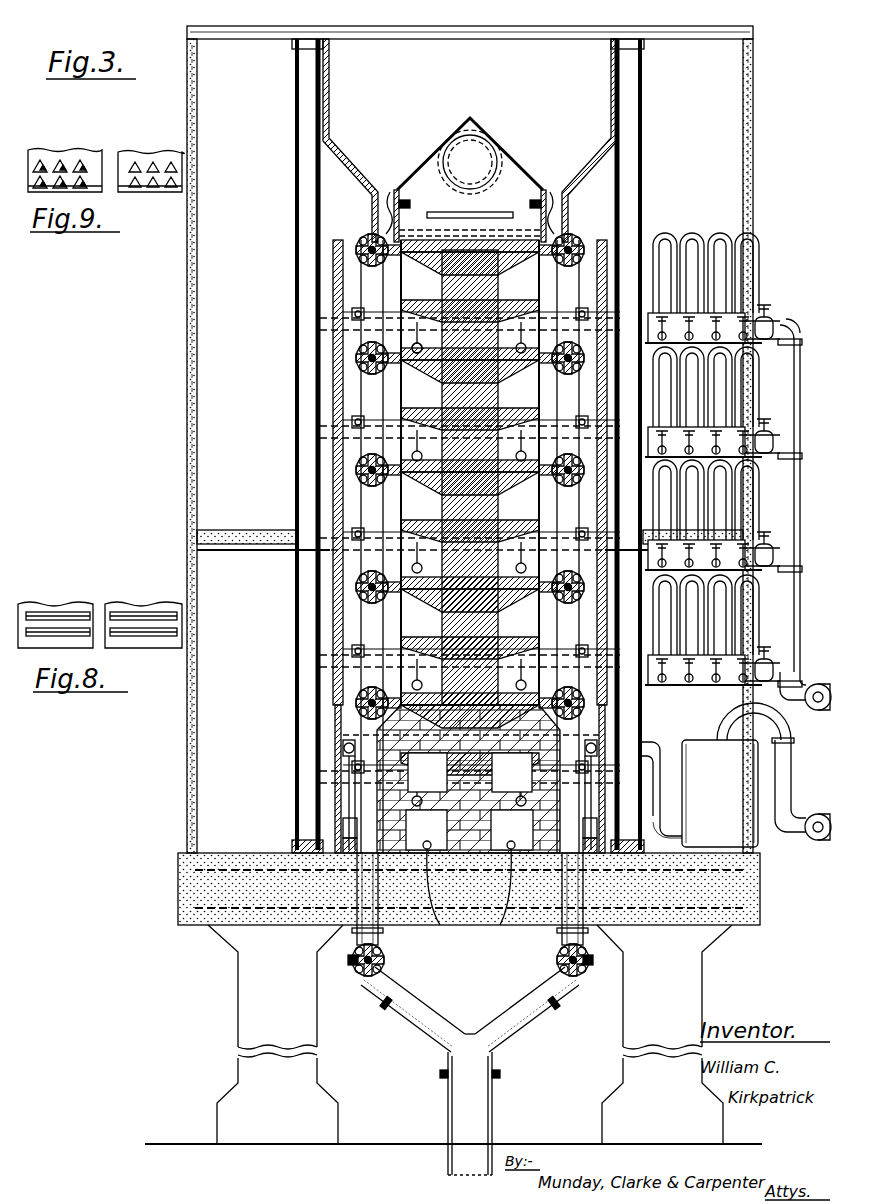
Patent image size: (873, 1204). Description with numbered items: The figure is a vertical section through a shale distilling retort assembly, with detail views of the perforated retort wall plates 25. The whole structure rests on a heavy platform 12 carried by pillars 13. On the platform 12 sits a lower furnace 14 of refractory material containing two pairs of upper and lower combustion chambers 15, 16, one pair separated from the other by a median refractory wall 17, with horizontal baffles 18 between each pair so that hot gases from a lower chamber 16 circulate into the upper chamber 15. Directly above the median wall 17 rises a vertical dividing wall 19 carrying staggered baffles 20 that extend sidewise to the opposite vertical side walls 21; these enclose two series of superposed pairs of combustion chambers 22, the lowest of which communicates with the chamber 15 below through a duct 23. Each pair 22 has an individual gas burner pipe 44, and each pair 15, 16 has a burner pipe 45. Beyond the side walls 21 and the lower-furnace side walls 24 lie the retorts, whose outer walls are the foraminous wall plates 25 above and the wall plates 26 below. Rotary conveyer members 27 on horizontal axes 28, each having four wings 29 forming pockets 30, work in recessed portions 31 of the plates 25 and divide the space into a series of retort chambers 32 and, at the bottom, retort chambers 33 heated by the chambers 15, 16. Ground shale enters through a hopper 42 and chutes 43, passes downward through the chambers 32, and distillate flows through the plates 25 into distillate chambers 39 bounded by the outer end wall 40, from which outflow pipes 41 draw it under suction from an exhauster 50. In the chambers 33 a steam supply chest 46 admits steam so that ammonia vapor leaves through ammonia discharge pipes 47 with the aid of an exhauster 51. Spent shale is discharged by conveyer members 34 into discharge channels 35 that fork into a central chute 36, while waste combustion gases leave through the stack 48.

In FIG. 3, the platform 12 is at (200, 895).
In FIG. 3, the pillars 13 is at (255, 963).
In FIG. 3, the lower furnace 14 is at (605, 722).
In FIG. 3, the upper combustion chamber 15 is at (470, 772).
In FIG. 3, the lower combustion chamber 16 is at (469, 830).
In FIG. 3, the median refractory wall 17 is at (472, 800).
In FIG. 3, the horizontal baffles 18 is at (491, 779).
In FIG. 3, the vertical dividing wall 19 is at (560, 285).
In FIG. 3, the baffles 20 is at (590, 318).
In FIG. 3, the vertical side walls 21 is at (395, 386).
In FIG. 3, the pairs of combustion chambers 22 is at (418, 320).
In FIG. 3, the duct 23 is at (400, 735).
In FIG. 3, the side walls of the lower furnace 24 is at (380, 760).
In FIG. 3, the wall plates 25 is at (560, 300).
In FIG. 9, the wall plates 25 is at (153, 186).
In FIG. 8, the wall plates 25 is at (100, 613).
In FIG. 3, the wall plates 26 is at (735, 540).
In FIG. 3, the rotary conveyer members 27 is at (640, 236).
In FIG. 3, the horizontal axes 28 is at (585, 262).
In FIG. 3, the wings 29 is at (360, 232).
In FIG. 3, the pockets 30 is at (465, 197).
In FIG. 3, the recessed portions 31 is at (356, 250).
In FIG. 3, the retort chambers 32 is at (385, 275).
In FIG. 3, the retort chambers 33 is at (345, 822).
In FIG. 3, the rotary conveyer members 34 is at (362, 978).
In FIG. 3, the discharge channels 35 is at (418, 1012).
In FIG. 3, the central discharge chute 36 is at (450, 1116).
In FIG. 3, the distillate chamber 39 is at (590, 510).
In FIG. 3, the outer end wall 40 is at (590, 490).
In FIG. 3, the outflow pipe 41 is at (330, 327).
In FIG. 3, the hopper 42 is at (440, 65).
In FIG. 3, the chutes 43 is at (355, 153).
In FIG. 3, the gas burner pipe 44 is at (360, 357).
In FIG. 3, the gas burner pipe 45 is at (469, 892).
In FIG. 3, the steam supply chest 46 is at (343, 845).
In FIG. 3, the ammonia discharge pipes 47 is at (343, 745).
In FIG. 3, the stack 48 is at (475, 150).
In FIG. 3, the exhauster 50 is at (817, 684).
In FIG. 3, the exhauster 51 is at (817, 814).